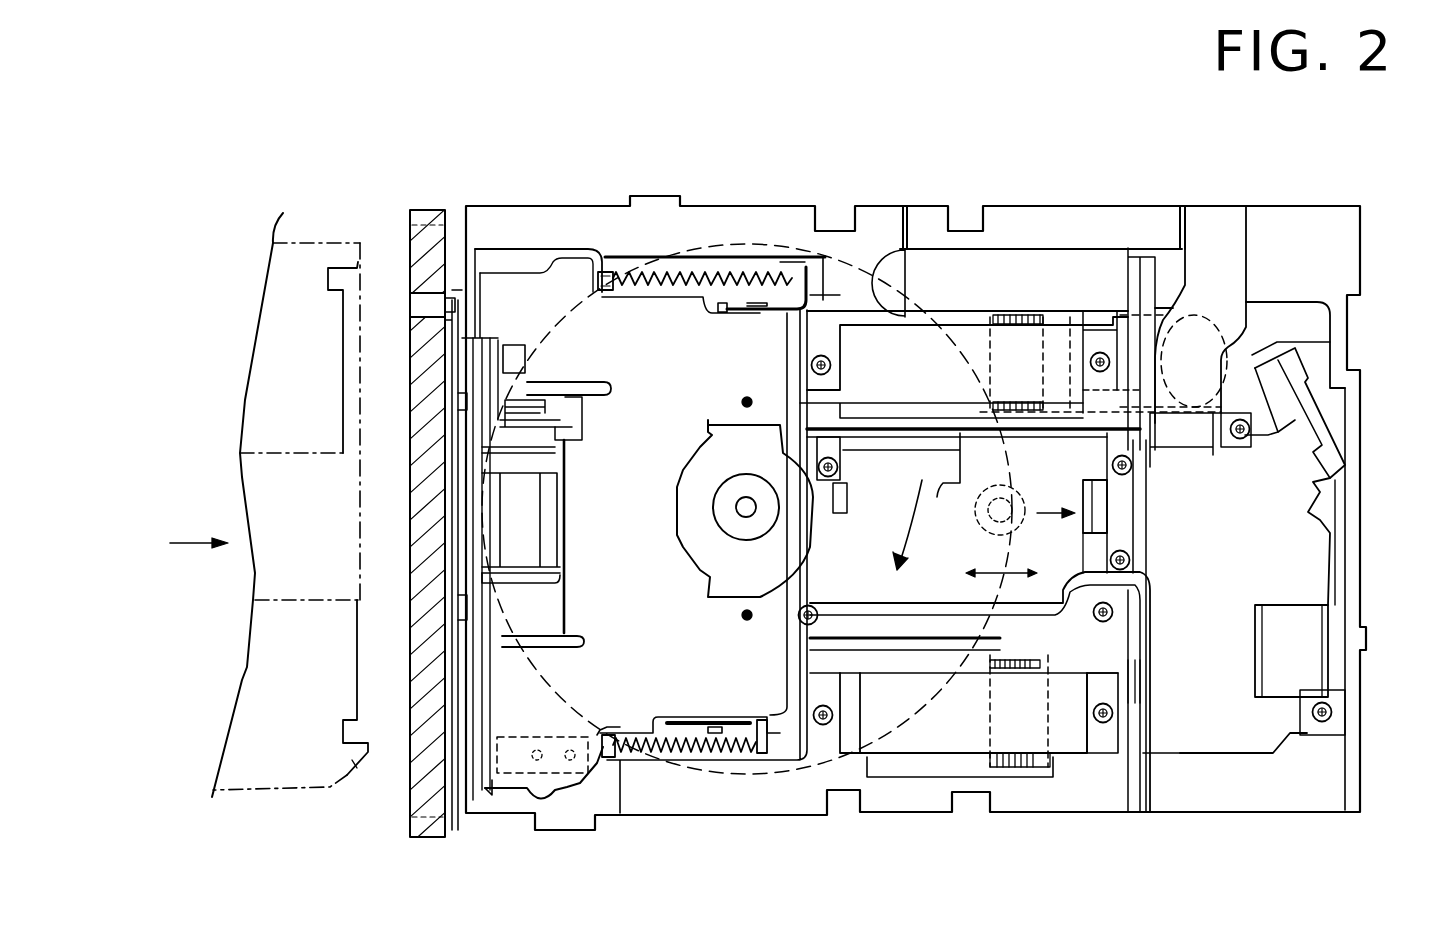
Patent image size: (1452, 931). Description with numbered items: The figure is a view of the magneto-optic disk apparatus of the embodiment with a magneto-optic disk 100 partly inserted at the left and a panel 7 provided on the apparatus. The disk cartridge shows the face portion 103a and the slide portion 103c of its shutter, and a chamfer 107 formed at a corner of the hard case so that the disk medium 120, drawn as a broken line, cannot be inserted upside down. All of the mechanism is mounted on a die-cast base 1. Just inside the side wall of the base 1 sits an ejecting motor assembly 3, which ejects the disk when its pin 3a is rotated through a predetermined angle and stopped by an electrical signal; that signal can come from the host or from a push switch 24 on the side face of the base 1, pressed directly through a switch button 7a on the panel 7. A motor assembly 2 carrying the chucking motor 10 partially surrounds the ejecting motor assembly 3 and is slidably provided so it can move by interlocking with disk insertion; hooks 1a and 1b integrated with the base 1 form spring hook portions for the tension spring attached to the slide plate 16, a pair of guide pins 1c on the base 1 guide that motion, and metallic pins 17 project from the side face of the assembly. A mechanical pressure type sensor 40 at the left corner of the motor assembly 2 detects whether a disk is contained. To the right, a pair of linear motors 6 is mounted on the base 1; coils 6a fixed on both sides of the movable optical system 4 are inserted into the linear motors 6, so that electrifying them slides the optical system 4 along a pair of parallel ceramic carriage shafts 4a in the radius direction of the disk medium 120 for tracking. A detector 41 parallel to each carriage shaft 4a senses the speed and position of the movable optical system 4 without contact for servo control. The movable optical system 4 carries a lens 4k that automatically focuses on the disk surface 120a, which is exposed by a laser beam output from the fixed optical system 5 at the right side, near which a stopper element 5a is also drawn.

The base 1 is at (883, 225).
The hook 1a is at (606, 270).
The hook 1b is at (608, 765).
The guide pin 1c is at (749, 393).
The motor assembly 2 is at (670, 330).
The ejecting motor assembly 3 is at (517, 553).
The pin 3a is at (505, 435).
The movable optical system 4 is at (1013, 533).
The carriage shaft 4a is at (893, 443).
The lens 4k is at (867, 747).
The fixed optical system 5 is at (1298, 552).
The lever stopper 5a is at (1125, 510).
The linear motor 6 is at (948, 360).
The coil 6a is at (1010, 445).
The panel 7 is at (423, 225).
The switch button 7a is at (410, 300).
The chucking motor 10 is at (737, 455).
The slide plate 16 is at (833, 273).
The metallic pin 17 is at (533, 407).
The push switch 24 is at (447, 380).
The mechanical pressure type sensor 40 is at (570, 790).
The detector 41 is at (1037, 660).
The magneto-optic disk 100 is at (303, 262).
The face portion 103a is at (318, 443).
The slide portion 103c is at (333, 267).
The chamfer 107 is at (357, 763).
The disk medium 120 is at (580, 303).
The disk surface 120a is at (837, 577).